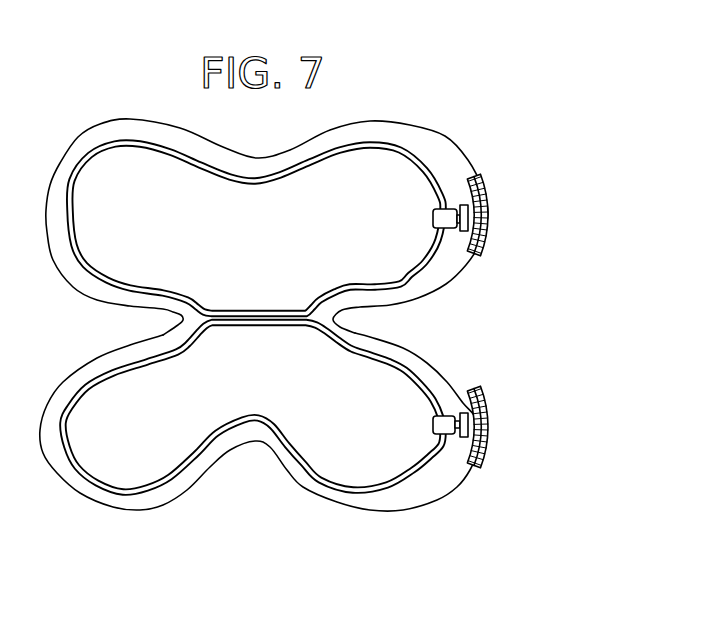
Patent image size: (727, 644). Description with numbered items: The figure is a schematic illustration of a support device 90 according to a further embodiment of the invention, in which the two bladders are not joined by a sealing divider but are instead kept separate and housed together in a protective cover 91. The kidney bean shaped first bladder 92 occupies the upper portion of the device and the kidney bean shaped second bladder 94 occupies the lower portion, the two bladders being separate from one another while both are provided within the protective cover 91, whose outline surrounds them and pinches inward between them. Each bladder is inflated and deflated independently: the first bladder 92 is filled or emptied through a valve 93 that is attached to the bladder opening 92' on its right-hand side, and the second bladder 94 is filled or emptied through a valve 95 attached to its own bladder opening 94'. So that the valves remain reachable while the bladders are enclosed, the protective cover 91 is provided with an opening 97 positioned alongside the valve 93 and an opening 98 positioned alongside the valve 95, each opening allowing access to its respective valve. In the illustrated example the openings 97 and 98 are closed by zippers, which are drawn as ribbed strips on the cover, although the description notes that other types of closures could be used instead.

The support device 90 is at (489, 145).
The protective cover 91 is at (406, 523).
The first bladder 92 is at (256, 228).
The second bladder 94 is at (253, 408).
The bladder opening 92' is at (471, 262).
The bladder opening 94' is at (471, 374).
The valve 93 is at (459, 188).
The valve 95 is at (462, 453).
The opening 97 is at (498, 246).
The opening 98 is at (500, 400).